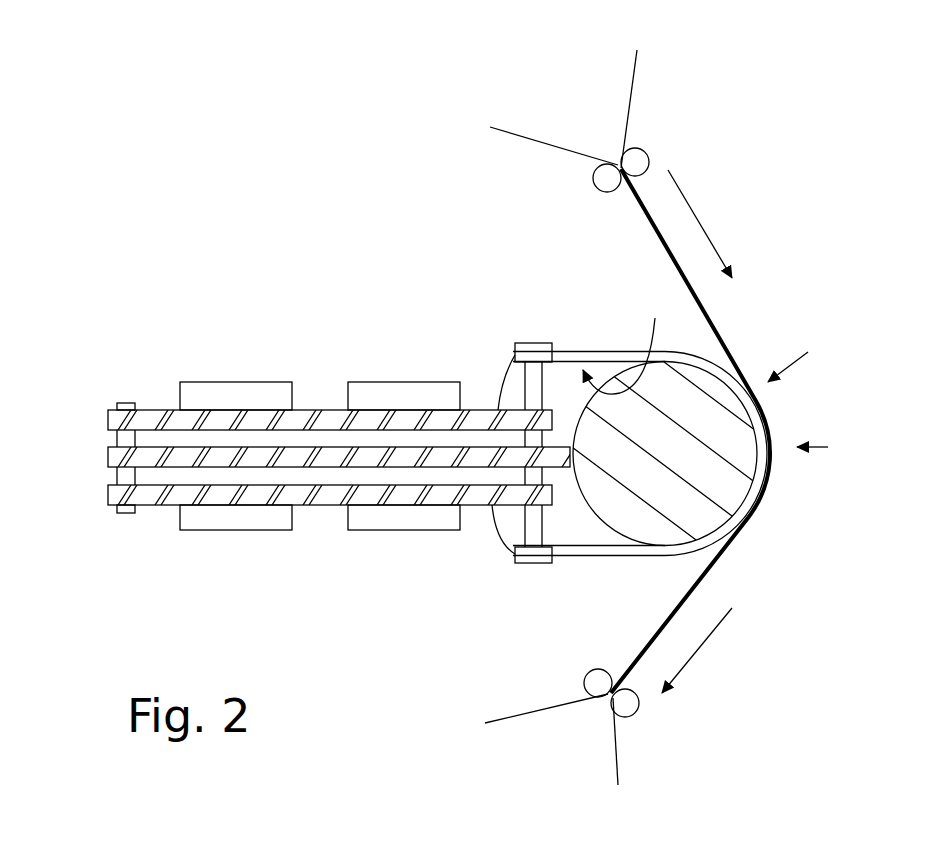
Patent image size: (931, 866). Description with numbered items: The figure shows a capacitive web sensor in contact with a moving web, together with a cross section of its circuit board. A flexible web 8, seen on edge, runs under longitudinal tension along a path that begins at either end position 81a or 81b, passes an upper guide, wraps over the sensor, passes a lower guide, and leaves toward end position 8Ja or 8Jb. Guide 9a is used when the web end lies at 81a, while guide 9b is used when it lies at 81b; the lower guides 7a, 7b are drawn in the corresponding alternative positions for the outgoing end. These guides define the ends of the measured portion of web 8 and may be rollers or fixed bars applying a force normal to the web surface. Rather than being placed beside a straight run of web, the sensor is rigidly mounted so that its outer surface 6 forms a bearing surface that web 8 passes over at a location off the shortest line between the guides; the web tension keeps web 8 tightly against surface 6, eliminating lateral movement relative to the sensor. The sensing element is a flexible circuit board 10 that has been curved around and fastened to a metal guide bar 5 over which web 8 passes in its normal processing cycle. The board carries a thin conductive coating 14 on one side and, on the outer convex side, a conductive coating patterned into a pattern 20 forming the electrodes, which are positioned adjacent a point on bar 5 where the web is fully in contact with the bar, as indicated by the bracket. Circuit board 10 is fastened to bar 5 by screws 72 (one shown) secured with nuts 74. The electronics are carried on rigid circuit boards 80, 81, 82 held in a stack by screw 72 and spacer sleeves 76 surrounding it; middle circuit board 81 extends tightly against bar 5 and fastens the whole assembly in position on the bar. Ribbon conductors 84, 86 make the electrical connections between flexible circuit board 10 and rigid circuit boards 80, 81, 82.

The metal guide bar 5 is at (665, 454).
The outer surface of sensor 6 is at (827, 445).
The lower guide pulley 7a is at (574, 676).
The lower guide pulley 7b is at (650, 716).
The flexible web 8 is at (708, 315).
The guide 9a is at (583, 180).
The guide 9b is at (660, 144).
The flexible circuit board 10 is at (633, 558).
The thin conductive coating 14 is at (626, 338).
The conductive pattern 20 is at (810, 358).
The screw 72 is at (530, 340).
The nut 74 is at (532, 560).
The spacer sleeve 76 is at (535, 385).
The rigid circuit board 80 is at (107, 423).
The middle circuit board 81 is at (107, 457).
The rigid circuit board 82 is at (107, 493).
The ribbon conductor 84 is at (503, 380).
The ribbon conductor 86 is at (492, 536).
The web end position 81a is at (527, 131).
The web end position 81b is at (652, 85).
The web end position 8Ja is at (522, 710).
The web end position 8Jb is at (632, 761).